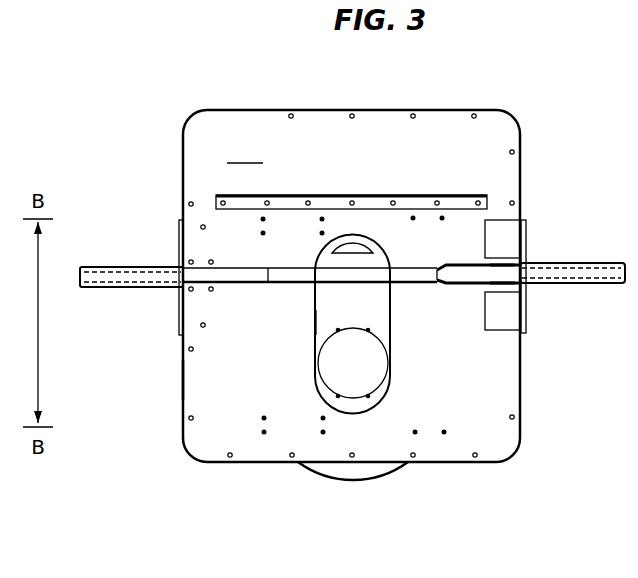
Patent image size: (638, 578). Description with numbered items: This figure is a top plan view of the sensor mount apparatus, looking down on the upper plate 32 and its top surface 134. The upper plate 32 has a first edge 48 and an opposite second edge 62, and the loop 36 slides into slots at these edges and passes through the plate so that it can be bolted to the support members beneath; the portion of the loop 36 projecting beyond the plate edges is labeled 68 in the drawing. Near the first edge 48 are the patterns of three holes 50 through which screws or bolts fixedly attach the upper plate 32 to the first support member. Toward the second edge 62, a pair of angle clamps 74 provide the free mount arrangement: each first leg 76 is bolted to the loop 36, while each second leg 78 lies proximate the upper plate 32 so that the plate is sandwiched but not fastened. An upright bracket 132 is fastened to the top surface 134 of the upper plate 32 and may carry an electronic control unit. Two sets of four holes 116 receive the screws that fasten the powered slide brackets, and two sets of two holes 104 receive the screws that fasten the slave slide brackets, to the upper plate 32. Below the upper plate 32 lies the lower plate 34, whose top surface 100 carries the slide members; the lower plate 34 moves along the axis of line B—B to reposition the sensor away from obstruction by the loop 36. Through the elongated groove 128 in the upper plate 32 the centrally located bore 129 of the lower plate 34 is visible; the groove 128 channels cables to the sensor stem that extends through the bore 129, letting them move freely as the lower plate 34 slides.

The upper plate 32 is at (437, 135).
The lower plate 34 is at (352, 470).
The loop 36 is at (455, 277).
The first edge 48 is at (176, 381).
The holes 50 is at (211, 262).
The second edge 62 is at (527, 172).
The rod 68 is at (553, 263).
The angle clamp 74 is at (534, 228).
The first leg 76 is at (497, 264).
The second leg 78 is at (490, 250).
The top surface 100 is at (335, 309).
The holes 104 is at (442, 218).
The holes 116 is at (322, 233).
The elongated groove 128 is at (316, 322).
The bore 129 is at (335, 373).
The upright bracket 132 is at (323, 193).
The top surface 134 is at (245, 152).